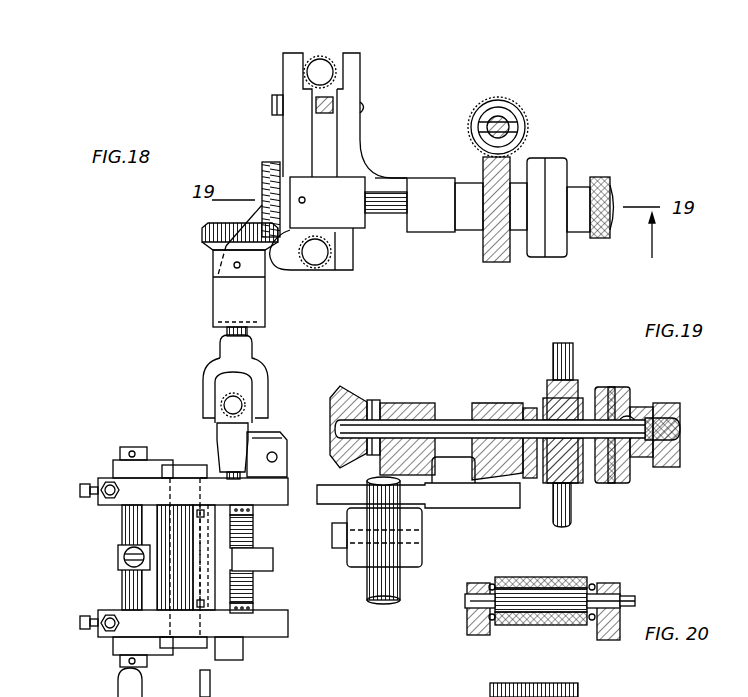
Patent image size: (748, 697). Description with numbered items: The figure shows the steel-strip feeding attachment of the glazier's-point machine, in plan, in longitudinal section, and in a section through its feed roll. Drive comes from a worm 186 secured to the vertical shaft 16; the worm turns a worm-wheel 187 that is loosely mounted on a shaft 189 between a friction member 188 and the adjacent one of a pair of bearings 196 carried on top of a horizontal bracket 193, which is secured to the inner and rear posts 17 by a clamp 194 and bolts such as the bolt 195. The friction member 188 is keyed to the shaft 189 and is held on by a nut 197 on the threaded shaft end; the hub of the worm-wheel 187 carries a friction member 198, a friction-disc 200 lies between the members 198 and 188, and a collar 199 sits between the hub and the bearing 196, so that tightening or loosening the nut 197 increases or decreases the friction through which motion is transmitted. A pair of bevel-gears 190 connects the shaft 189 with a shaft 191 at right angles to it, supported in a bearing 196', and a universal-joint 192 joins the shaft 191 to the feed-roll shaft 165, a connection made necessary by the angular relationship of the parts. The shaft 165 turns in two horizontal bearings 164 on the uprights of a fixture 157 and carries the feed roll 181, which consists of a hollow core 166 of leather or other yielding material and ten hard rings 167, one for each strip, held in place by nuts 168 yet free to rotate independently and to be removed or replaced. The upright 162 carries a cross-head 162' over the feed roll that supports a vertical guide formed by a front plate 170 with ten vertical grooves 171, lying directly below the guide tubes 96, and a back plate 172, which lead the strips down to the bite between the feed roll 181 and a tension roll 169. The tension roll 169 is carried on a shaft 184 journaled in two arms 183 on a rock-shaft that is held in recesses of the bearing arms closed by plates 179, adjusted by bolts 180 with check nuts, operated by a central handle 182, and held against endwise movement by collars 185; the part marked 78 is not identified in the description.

In FIG. 18, the inner and rear posts 17 is at (327, 55).
In FIG. 19, the inner and rear posts 17 is at (377, 588).
In FIG. 18, the bolt 195 is at (364, 109).
In FIG. 18, the clamp 194 is at (298, 133).
In FIG. 18, the horizontal bracket 193 is at (388, 178).
In FIG. 19, the horizontal bracket 193 is at (472, 495).
In FIG. 18, the bevel-gears 190 is at (270, 175).
In FIG. 19, the bevel-gears 190 is at (347, 390).
In FIG. 18, the bearings 196 is at (372, 204).
In FIG. 19, the bearings 196 is at (461, 425).
In FIG. 18, the bearing 196' is at (211, 288).
In FIG. 18, the shaft 191 is at (225, 330).
In FIG. 19, the shaft 191 is at (668, 466).
In FIG. 18, the shaft 189 is at (396, 214).
In FIG. 19, the shaft 189 is at (448, 428).
In FIG. 18, the collar 199 is at (466, 217).
In FIG. 19, the collar 199 is at (535, 478).
In FIG. 18, the worm-wheel 187 is at (497, 262).
In FIG. 19, the worm-wheel 187 is at (553, 380).
In FIG. 18, the worm 186 is at (503, 100).
In FIG. 18, the vertical shaft 16 is at (509, 125).
In FIG. 19, the vertical shaft 16 is at (575, 348).
In FIG. 18, the friction member 198 is at (537, 167).
In FIG. 19, the friction member 198 is at (607, 483).
In FIG. 18, the friction-disc 200 is at (545, 250).
In FIG. 19, the friction-disc 200 is at (612, 387).
In FIG. 18, the friction member 188 is at (557, 243).
In FIG. 19, the friction member 188 is at (634, 407).
In FIG. 18, the nut 197 is at (603, 190).
In FIG. 18, the universal-joint 192 is at (252, 392).
In FIG. 18, the shaft 165 is at (243, 477).
In FIG. 20, the shaft 165 is at (625, 597).
In FIG. 18, the shaft 184 is at (200, 478).
In FIG. 18, the arms 183 is at (187, 480).
In FIG. 18, the collars 185 is at (132, 447).
In FIG. 18, the bolt 180 is at (80, 490).
In FIG. 18, the plate 179 is at (131, 560).
In FIG. 18, the rod 78 is at (132, 510).
In FIG. 18, the back plate 172 is at (203, 527).
In FIG. 18, the handle 182 is at (118, 560).
In FIG. 18, the tension roll 169 is at (175, 580).
In FIG. 18, the bearings 164 is at (193, 558).
In FIG. 18, the nuts 168 is at (255, 512).
In FIG. 20, the nuts 168 is at (495, 580).
In FIG. 18, the feed roll 181 is at (255, 535).
In FIG. 20, the feed roll 181 is at (569, 577).
In FIG. 18, the upright 162 is at (278, 562).
In FIG. 18, the cross-head 162' is at (240, 559).
In FIG. 18, the front plate 170 is at (207, 613).
In FIG. 18, the vertical grooves 171 is at (215, 585).
In FIG. 18, the fixture 157 is at (240, 657).
In FIG. 18, the guide tubes 96 is at (211, 687).
In FIG. 20, the guide tubes 96 is at (490, 693).
In FIG. 20, the hollow core 166 is at (520, 577).
In FIG. 20, the hard rings 167 is at (518, 627).